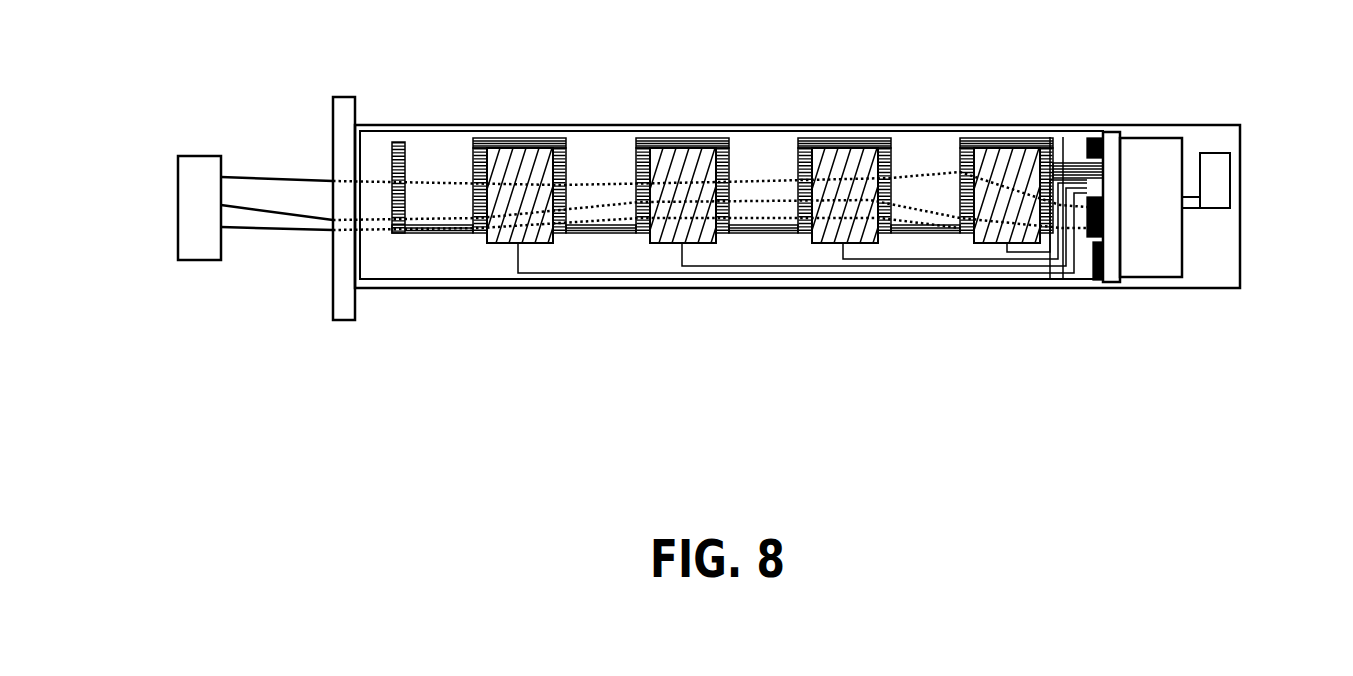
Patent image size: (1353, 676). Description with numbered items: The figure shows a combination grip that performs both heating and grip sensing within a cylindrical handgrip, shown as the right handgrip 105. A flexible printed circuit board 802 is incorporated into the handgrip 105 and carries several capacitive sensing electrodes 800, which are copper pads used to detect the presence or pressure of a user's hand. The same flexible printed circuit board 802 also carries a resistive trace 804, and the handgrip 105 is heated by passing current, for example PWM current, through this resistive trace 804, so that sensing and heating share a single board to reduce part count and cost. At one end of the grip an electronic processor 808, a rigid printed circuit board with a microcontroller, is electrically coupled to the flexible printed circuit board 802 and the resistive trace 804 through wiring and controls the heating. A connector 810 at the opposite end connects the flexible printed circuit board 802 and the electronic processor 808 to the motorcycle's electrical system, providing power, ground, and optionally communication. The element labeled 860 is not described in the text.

The right handgrip 105 is at (1142, 290).
The capacitive sensing electrodes 800 is at (540, 248).
The flexible printed circuit board 802 is at (437, 233).
The resistive trace 804 is at (717, 137).
The electronic processor 808 is at (1107, 127).
The connector 810 is at (177, 182).
The circuit board 860 is at (1185, 240).